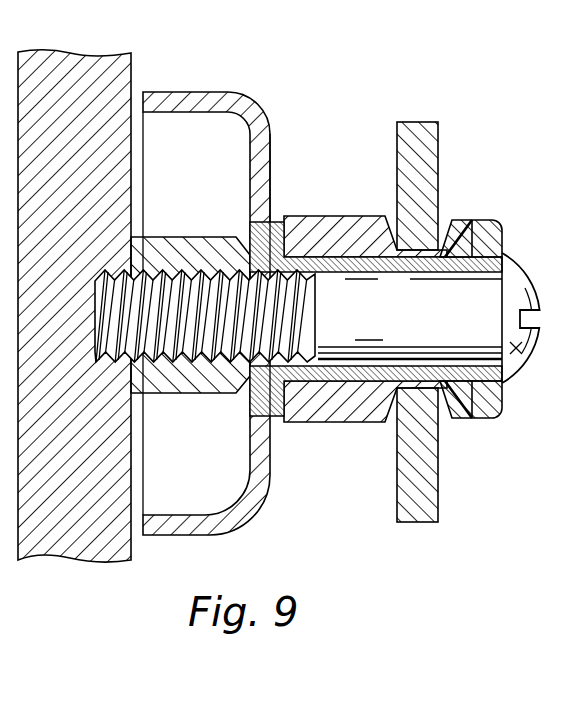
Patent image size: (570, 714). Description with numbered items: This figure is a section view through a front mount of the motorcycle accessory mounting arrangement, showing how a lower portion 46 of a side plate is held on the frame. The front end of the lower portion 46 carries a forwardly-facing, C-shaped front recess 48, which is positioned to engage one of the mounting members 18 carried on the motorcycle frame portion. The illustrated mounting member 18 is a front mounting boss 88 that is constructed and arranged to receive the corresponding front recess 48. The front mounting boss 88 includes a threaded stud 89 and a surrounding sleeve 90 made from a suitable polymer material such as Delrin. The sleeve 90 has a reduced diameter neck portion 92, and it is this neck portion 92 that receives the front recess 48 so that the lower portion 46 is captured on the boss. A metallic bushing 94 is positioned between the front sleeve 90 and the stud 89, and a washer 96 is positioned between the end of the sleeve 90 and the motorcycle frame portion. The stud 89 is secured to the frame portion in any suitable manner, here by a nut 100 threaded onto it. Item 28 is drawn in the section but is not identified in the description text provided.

The mounting member 18 is at (319, 444).
The housing cup 28 is at (254, 84).
The lower portion 46 is at (419, 127).
The front recess 48 is at (425, 388).
The front mounting boss 88 is at (351, 163).
The threaded stud 89 is at (523, 353).
The sleeve 90 is at (369, 222).
The neck portion 92 is at (421, 243).
The metallic bushing 94 is at (500, 224).
The washer 96 is at (273, 214).
The nut 100 is at (168, 396).